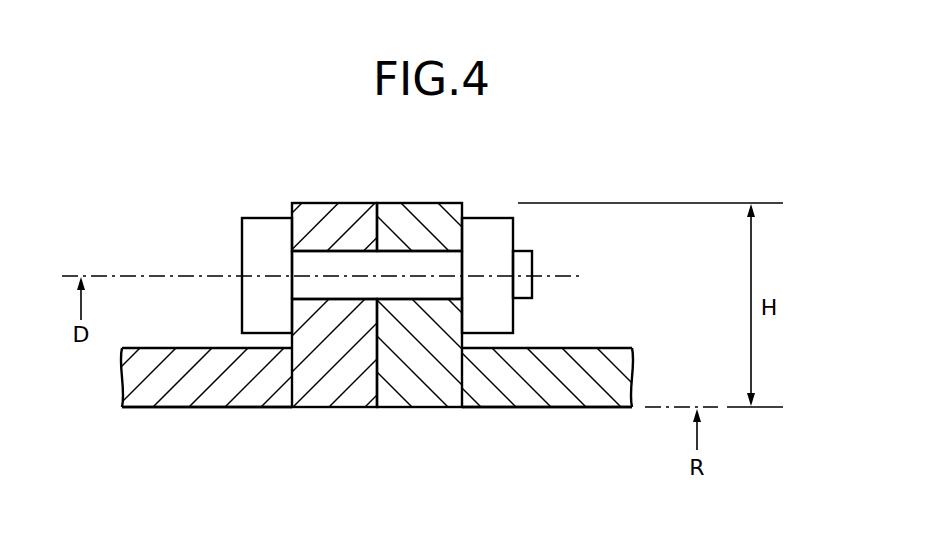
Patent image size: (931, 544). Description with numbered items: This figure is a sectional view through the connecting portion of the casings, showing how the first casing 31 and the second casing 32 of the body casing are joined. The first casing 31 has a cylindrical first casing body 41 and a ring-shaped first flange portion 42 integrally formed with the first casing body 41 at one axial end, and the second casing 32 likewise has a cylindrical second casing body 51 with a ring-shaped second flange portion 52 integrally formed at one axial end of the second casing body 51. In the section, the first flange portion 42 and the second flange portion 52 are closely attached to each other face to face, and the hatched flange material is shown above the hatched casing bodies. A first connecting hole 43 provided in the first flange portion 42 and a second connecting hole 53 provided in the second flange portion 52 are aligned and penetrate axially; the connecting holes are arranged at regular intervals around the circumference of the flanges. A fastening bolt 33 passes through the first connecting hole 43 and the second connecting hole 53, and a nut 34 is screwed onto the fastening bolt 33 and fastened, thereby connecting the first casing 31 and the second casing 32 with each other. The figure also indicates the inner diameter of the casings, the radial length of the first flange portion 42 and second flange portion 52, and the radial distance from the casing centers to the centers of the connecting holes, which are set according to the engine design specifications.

The first casing 31 is at (163, 423).
The second casing 32 is at (609, 423).
The fastening bolt 33 is at (266, 228).
The nut 34 is at (488, 228).
The first casing body 41 is at (212, 376).
The first flange portion 42 is at (319, 213).
The first connecting hole 43 is at (326, 302).
The second casing body 51 is at (548, 378).
The second flange portion 52 is at (417, 213).
The second connecting hole 53 is at (419, 302).